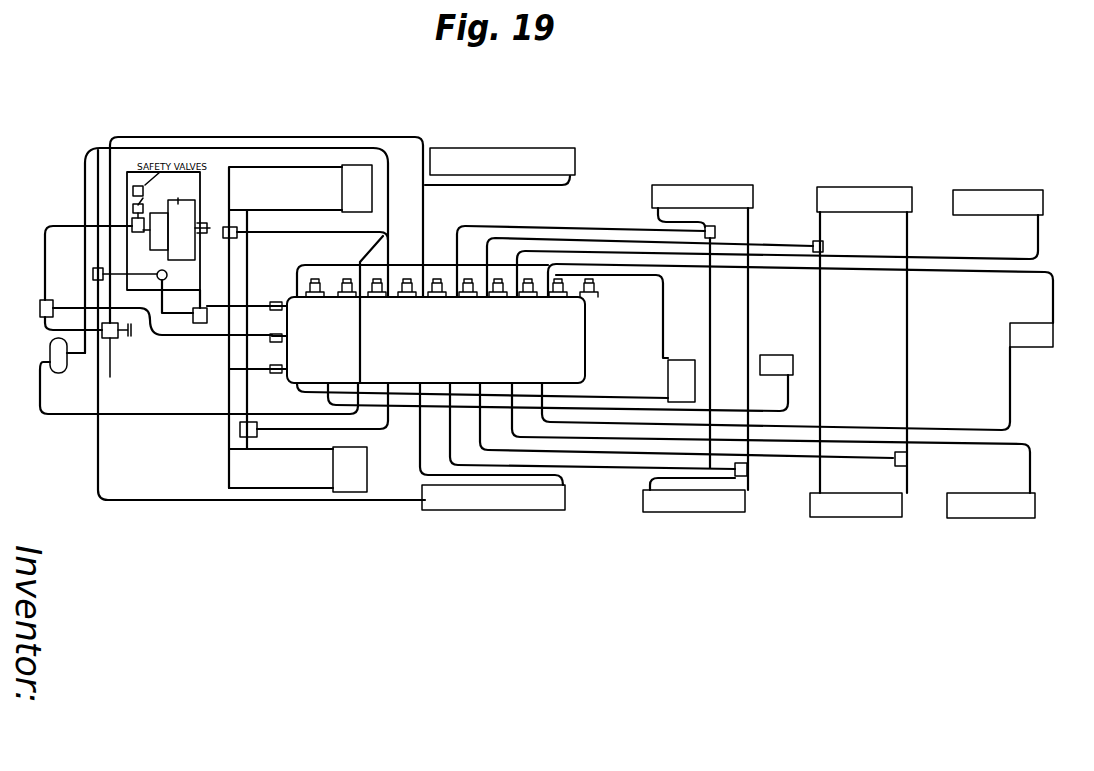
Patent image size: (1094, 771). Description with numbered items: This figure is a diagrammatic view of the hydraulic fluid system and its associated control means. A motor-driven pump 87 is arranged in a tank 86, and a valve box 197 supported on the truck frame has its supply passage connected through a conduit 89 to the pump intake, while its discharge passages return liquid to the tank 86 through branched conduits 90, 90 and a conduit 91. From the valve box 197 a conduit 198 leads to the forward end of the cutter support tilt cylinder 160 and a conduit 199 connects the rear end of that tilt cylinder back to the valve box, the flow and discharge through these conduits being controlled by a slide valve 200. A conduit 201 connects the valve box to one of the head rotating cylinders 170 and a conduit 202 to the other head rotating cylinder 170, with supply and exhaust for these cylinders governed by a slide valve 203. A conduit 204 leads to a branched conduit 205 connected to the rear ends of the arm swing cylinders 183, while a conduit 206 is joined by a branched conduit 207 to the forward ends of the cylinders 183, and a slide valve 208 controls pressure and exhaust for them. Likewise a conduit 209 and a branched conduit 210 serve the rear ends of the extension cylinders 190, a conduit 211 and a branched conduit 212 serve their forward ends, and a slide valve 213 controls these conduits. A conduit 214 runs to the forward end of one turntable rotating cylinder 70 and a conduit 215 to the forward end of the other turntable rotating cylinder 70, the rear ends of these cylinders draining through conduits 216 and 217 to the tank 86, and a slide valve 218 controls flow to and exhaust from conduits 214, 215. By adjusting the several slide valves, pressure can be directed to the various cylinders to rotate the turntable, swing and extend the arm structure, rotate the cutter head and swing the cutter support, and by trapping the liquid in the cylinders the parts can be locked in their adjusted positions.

The turntable rotating cylinder 70 is at (549, 148).
The tank 86 is at (190, 277).
The pump 87 is at (188, 218).
The conduit 89 is at (40, 229).
The branched conduits 90 is at (266, 303).
The conduit 91 is at (185, 320).
The cutter support tilt cylinder 160 is at (1027, 311).
The head rotating cylinder 170 is at (1002, 190).
The arm swing cylinder 183 is at (863, 187).
The extension cylinder 190 is at (753, 197).
The valve box 197 is at (577, 351).
The conduit 198 is at (963, 276).
The conduit 199 is at (1011, 421).
The slide valve 200 is at (570, 290).
The conduit 201 is at (951, 257).
The conduit 202 is at (1047, 466).
The slide valve 203 is at (541, 301).
The conduit 204 is at (511, 238).
The branched conduit 205 is at (822, 380).
The conduit 206 is at (635, 458).
The branched conduit 207 is at (908, 385).
The slide valve 208 is at (500, 301).
The conduit 209 is at (585, 229).
The branched conduit 210 is at (707, 323).
The conduit 211 is at (597, 471).
The branched conduit 212 is at (749, 321).
The slide valve 213 is at (468, 301).
The conduit 214 is at (447, 205).
The conduit 215 is at (419, 451).
The conduit 216 is at (345, 137).
The conduit 217 is at (307, 507).
The slide valve 218 is at (433, 301).